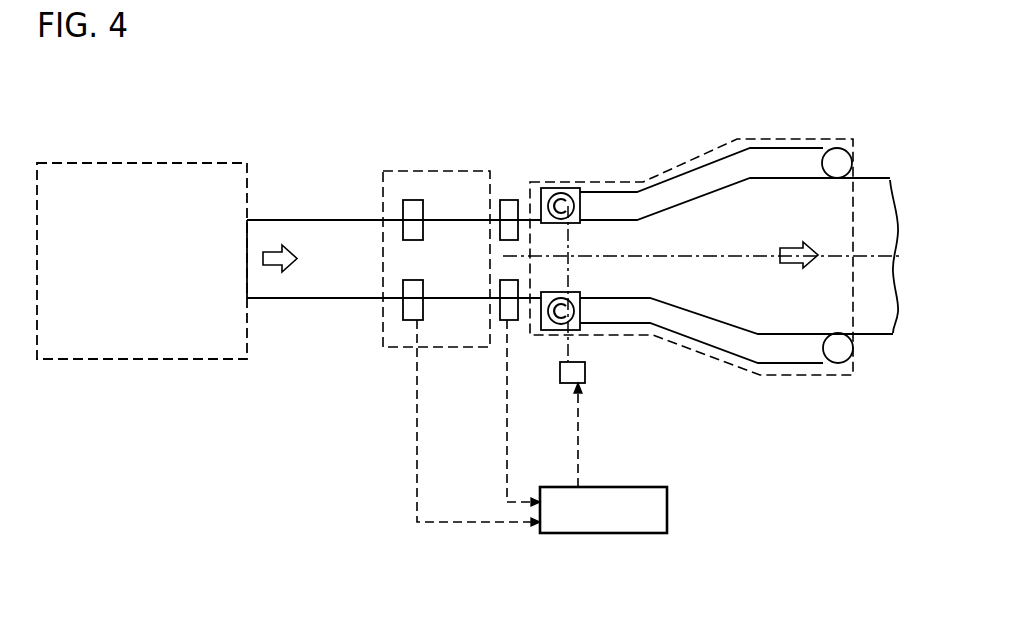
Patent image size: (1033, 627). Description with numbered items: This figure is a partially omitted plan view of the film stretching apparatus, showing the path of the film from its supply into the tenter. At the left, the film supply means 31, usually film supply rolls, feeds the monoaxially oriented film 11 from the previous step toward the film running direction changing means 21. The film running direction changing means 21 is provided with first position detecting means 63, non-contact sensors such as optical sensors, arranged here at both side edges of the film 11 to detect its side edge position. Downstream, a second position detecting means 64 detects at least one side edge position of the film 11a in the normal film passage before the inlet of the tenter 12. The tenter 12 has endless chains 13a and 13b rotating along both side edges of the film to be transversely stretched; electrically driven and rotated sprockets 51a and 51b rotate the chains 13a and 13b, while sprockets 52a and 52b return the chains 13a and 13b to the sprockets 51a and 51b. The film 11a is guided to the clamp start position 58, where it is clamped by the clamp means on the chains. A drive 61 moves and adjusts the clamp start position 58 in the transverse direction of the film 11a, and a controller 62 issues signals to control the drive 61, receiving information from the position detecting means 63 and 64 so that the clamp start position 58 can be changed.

The monoaxially oriented film 11 is at (328, 280).
The film 11a is at (537, 242).
The tenter 12 is at (687, 158).
The endless chain 13a is at (708, 195).
The endless chain 13b is at (716, 318).
The film running direction changing means 21 is at (445, 171).
The film supply means 31 is at (153, 359).
The sprocket 51a is at (565, 193).
The sprocket 51b is at (582, 337).
The sprocket 52a is at (833, 165).
The sprocket 52b is at (833, 357).
The clamp start position 58 is at (572, 227).
The drive 61 is at (585, 378).
The controller 62 is at (630, 533).
The first position detecting means 63 is at (410, 200).
The second position detecting means 64 is at (507, 200).